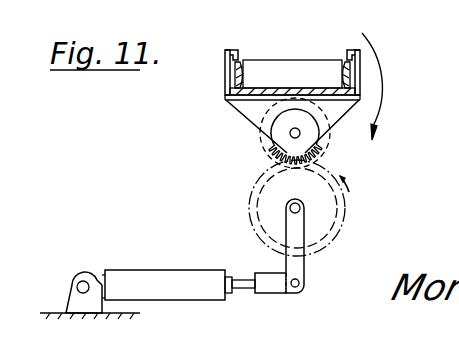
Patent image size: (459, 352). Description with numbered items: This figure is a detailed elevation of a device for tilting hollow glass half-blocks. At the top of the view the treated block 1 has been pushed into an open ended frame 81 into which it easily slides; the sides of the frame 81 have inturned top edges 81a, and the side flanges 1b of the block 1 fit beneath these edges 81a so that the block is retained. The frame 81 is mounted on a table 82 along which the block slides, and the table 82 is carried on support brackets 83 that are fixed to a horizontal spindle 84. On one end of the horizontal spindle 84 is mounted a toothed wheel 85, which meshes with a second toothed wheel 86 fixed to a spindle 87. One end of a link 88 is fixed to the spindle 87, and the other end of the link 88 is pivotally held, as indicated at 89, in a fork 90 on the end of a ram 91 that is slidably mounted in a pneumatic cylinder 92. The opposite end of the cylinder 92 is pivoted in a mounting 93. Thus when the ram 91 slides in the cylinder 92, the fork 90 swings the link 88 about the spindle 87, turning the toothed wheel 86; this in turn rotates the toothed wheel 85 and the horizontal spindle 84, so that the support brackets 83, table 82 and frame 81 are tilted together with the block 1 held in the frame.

The treated block 1 is at (281, 72).
The side flanges 1b is at (238, 75).
The open ended frame 81 is at (358, 85).
The inturned top edges 81a is at (232, 50).
The table 82 is at (335, 93).
The support brackets 83 is at (331, 122).
The horizontal spindle 84 is at (291, 136).
The toothed wheel 85 is at (262, 130).
The toothed wheel 86 is at (330, 212).
The spindle 87 is at (288, 207).
The link 88 is at (298, 263).
The pivot 89 is at (300, 284).
The fork 90 is at (282, 294).
The ram 91 is at (243, 289).
The pneumatic cylinder 92 is at (151, 278).
The mounting 93 is at (84, 281).